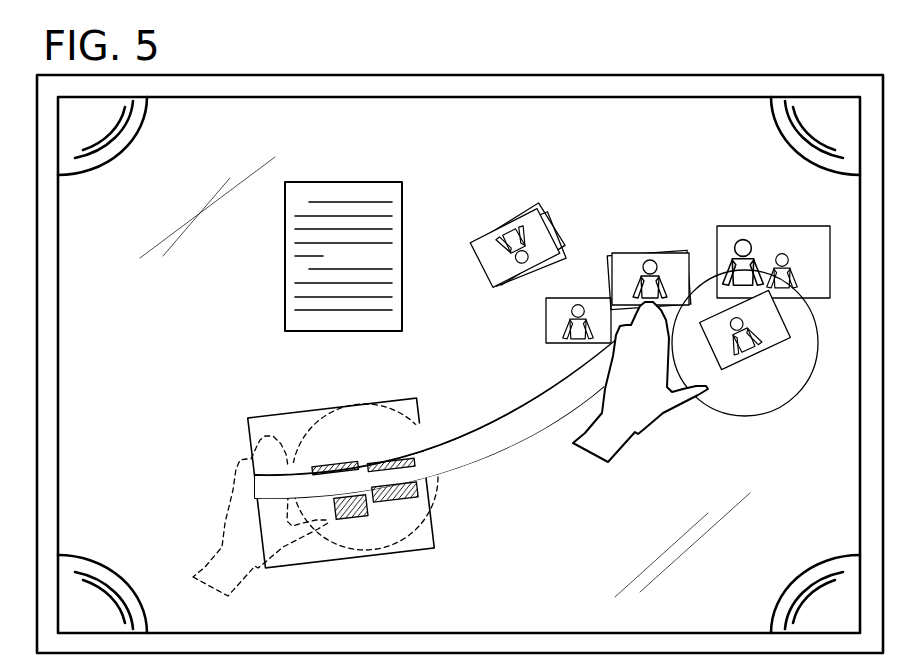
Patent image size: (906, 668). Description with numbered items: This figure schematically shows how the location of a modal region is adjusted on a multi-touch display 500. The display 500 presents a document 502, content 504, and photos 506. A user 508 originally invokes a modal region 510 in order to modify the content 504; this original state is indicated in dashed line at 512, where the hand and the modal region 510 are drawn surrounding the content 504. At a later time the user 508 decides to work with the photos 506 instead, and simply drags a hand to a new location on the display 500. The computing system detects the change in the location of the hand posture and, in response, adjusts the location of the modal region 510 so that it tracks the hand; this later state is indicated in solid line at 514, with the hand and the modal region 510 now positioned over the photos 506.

The multi-touch display 500 is at (718, 75).
The document 502 is at (302, 176).
The content 504 is at (327, 458).
The photos 506 is at (653, 221).
The user 508 is at (656, 414).
The modal region 510 is at (808, 383).
The original location (dashed line) 512 is at (359, 572).
The new location (solid line) 514 is at (741, 441).